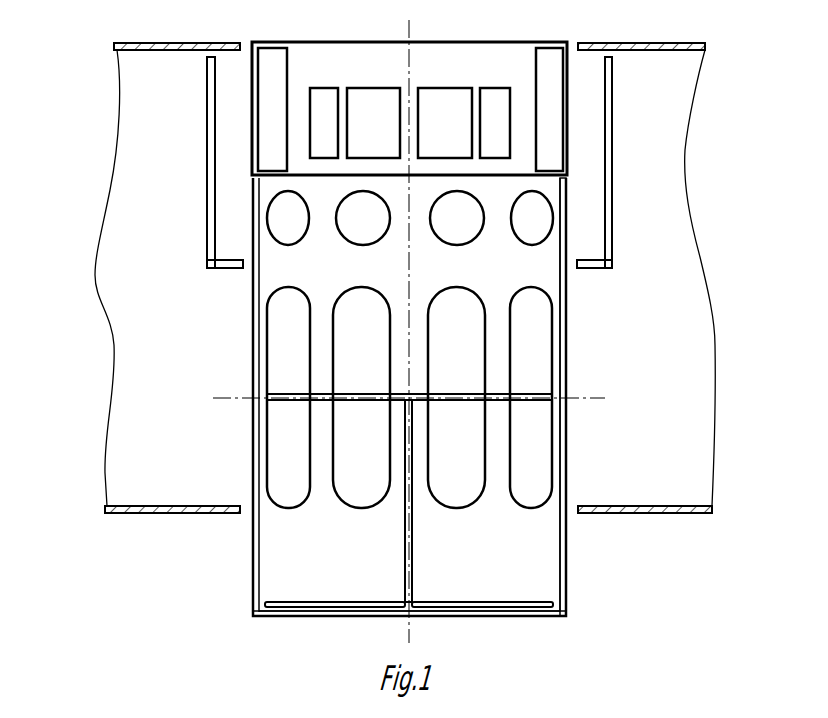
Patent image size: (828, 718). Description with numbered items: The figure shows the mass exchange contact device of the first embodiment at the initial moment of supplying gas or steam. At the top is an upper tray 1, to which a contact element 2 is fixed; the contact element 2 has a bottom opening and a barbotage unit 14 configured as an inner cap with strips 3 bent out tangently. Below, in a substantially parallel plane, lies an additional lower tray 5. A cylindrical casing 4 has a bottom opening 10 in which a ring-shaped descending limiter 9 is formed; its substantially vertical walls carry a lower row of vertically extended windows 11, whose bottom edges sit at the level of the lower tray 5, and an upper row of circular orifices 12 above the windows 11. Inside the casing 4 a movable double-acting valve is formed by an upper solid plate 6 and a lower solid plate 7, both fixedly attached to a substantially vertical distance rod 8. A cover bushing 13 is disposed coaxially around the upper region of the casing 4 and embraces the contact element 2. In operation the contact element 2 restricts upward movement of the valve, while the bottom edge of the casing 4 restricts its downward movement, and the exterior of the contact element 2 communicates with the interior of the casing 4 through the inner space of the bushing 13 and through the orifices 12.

The upper tray 1 is at (142, 72).
The contact element 2 is at (166, 109).
The strips 3 is at (556, 123).
The cylindrical casing 4 is at (305, 397).
The lower tray 5 is at (143, 427).
The upper solid plate 6 is at (534, 339).
The lower solid plate 7 is at (681, 422).
The distance rod 8 is at (603, 501).
The ring-shaped descending limiter 9 is at (299, 553).
The bottom opening 10 is at (303, 639).
The vertically extended windows 11 is at (298, 387).
The circular orifices 12 is at (534, 227).
The cover bushing 13 is at (689, 162).
The barbotage unit 14 is at (669, 109).